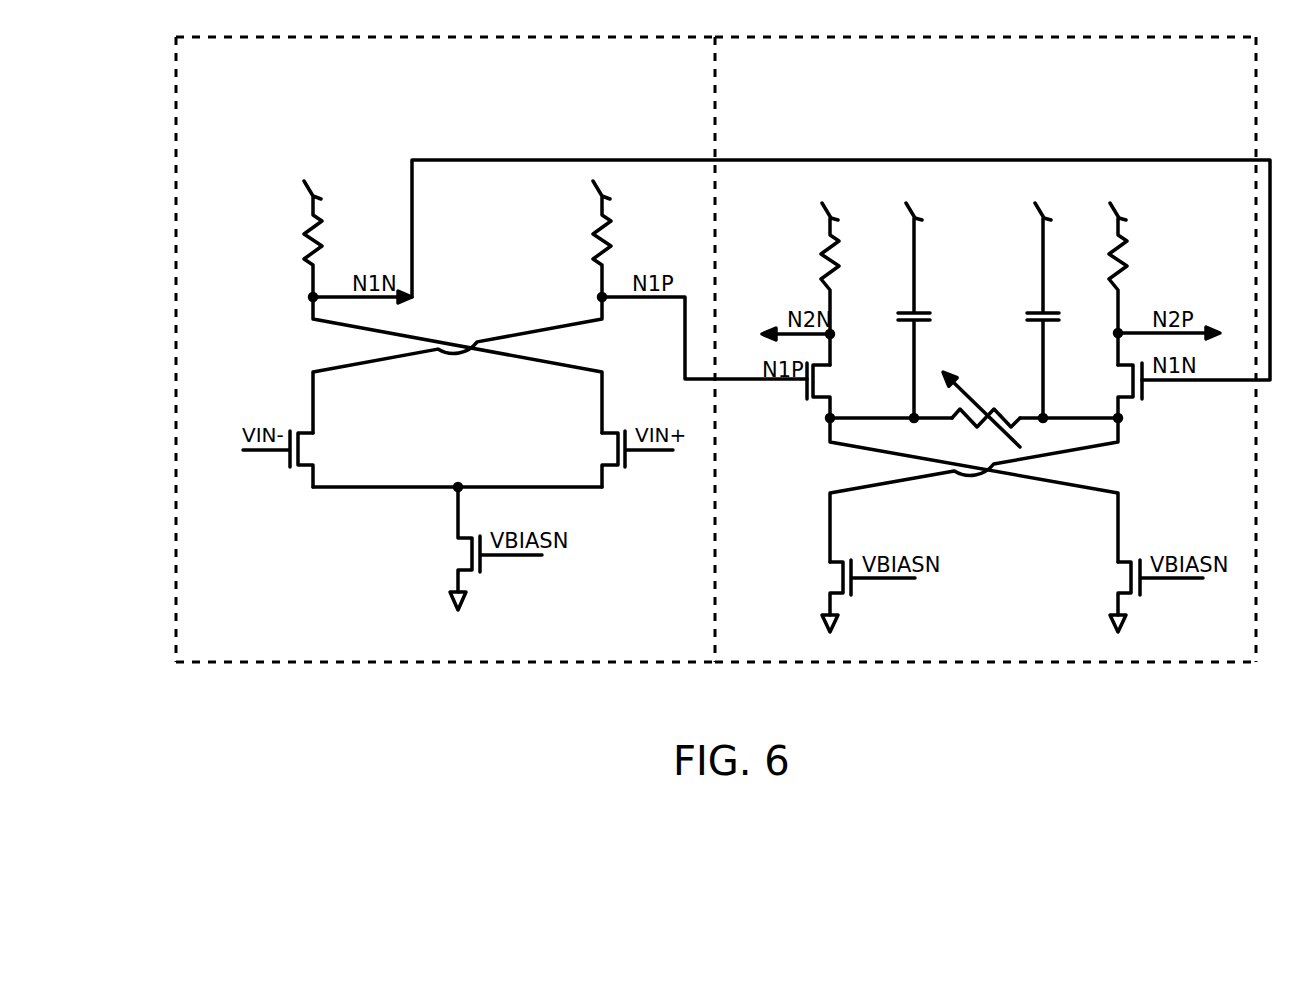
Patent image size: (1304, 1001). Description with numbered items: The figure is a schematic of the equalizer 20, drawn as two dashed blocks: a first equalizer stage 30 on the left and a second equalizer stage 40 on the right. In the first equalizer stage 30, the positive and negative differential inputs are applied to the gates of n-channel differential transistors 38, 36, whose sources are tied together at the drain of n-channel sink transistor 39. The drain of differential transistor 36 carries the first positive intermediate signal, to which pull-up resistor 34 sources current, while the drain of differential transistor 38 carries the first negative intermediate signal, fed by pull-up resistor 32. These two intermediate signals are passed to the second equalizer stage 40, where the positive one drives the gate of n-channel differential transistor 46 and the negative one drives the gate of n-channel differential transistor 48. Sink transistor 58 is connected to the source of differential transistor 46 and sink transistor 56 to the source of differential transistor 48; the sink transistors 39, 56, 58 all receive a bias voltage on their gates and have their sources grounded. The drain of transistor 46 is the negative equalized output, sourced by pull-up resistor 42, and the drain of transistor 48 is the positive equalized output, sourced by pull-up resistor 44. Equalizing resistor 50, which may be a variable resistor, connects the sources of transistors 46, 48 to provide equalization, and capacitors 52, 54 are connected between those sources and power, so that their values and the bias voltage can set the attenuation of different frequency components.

The equalizer 20 is at (975, 735).
The first equalizer stage 30 is at (470, 130).
The second equalizer stage 40 is at (988, 115).
The pull-up resistor 32 is at (300, 220).
The pull-up resistor 34 is at (585, 253).
The n-channel differential transistor 36 is at (307, 446).
The n-channel differential transistor 38 is at (602, 443).
The n-channel sink transistor 39 is at (457, 552).
The pull-up resistor 42 is at (823, 243).
The pull-up resistor 44 is at (1111, 273).
The n-channel differential transistor 46 is at (822, 380).
The n-channel differential transistor 48 is at (1119, 373).
The equalizing resistor 50 is at (990, 404).
The capacitor 52 is at (898, 306).
The capacitor 54 is at (1026, 306).
The n-channel sink transistor 56 is at (830, 573).
The n-channel sink transistor 58 is at (1119, 573).